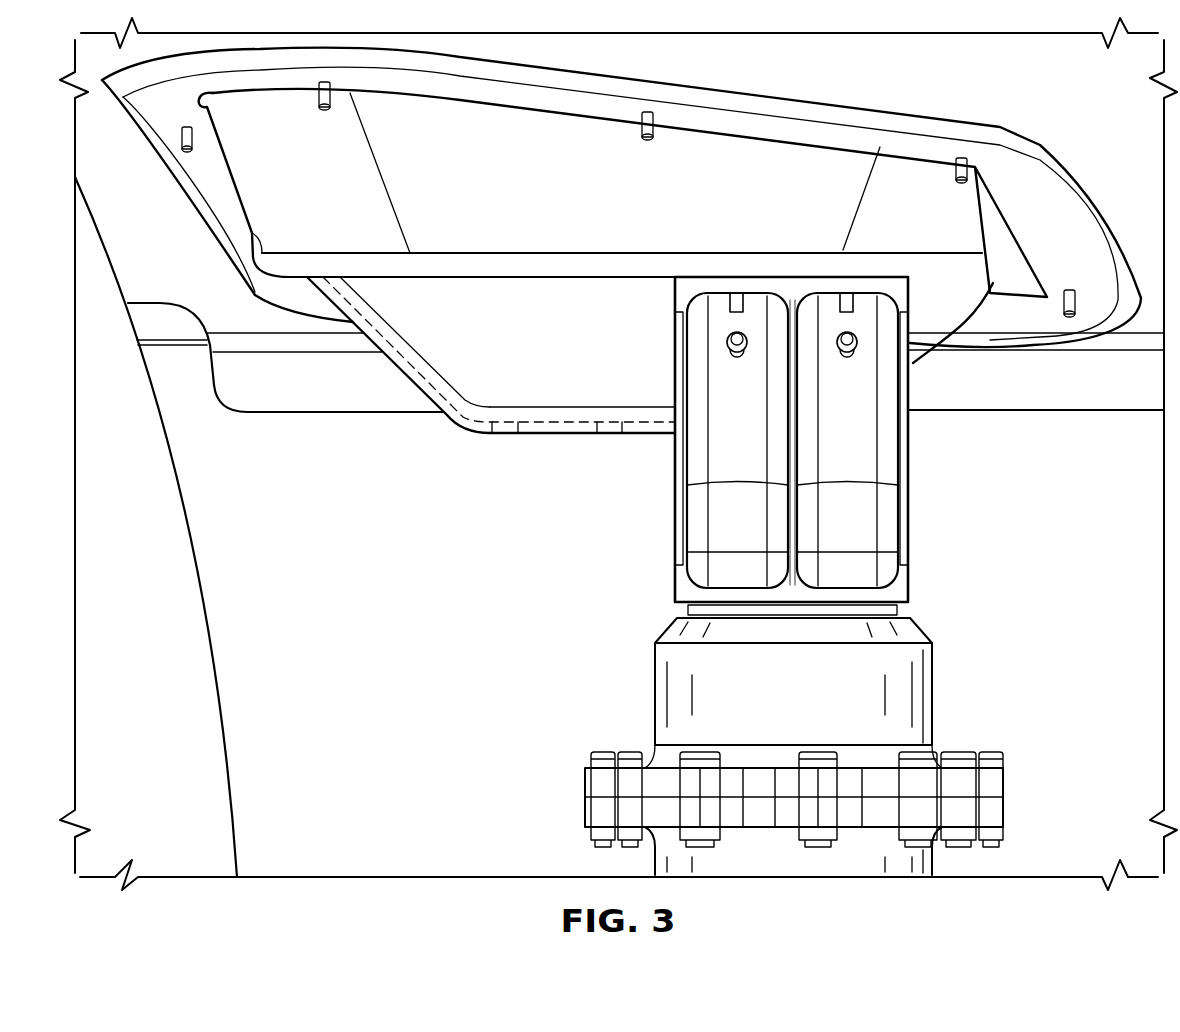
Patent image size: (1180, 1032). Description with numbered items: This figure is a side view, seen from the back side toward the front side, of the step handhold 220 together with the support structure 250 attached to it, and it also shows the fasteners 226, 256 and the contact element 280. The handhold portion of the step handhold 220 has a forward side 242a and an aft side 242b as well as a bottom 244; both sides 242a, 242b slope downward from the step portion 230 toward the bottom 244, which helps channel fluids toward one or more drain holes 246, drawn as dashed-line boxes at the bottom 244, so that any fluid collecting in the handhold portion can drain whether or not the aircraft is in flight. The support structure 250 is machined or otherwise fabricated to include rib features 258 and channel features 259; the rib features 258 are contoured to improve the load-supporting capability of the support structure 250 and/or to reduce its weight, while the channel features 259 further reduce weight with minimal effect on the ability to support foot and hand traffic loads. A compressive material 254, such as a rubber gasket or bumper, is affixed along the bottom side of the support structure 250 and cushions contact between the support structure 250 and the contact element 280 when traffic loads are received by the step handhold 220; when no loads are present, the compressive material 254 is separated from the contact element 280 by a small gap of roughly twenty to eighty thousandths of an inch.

The step handhold 220 is at (1000, 112).
The fasteners 226 is at (323, 110).
The step portion 230 is at (366, 258).
The forward side 242a is at (918, 364).
The aft side 242b is at (412, 383).
The bottom 244 is at (537, 435).
The drain holes 246 is at (610, 423).
The support structure 250 is at (667, 503).
The compressive material 254 is at (793, 606).
The fasteners 256 is at (737, 300).
The rib features 258 is at (681, 539).
The channel features 259 is at (737, 460).
The contact element 280 is at (655, 690).